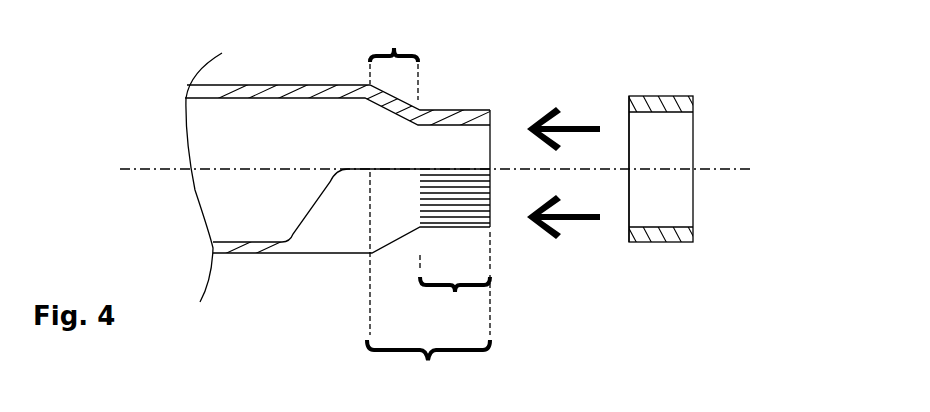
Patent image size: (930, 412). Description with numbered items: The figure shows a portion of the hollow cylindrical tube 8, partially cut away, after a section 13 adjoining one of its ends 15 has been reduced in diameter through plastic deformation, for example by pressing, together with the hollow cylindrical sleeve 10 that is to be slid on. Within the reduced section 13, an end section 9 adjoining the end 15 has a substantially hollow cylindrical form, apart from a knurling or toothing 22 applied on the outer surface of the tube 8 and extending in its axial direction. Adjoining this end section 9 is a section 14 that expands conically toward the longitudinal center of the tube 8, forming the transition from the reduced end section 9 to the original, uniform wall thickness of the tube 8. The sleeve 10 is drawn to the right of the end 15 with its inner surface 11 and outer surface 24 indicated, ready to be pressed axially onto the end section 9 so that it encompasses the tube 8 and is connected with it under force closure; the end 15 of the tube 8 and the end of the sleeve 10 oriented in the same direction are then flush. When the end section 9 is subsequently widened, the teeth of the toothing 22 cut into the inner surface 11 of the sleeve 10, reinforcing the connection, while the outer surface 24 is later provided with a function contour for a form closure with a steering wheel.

The tube 8 is at (238, 90).
The section 14 is at (394, 59).
The end 15 is at (490, 110).
The toothing 22 is at (470, 192).
The end section 9 is at (455, 277).
The section 13 is at (428, 285).
The sleeve 10 is at (676, 100).
The outer surface 24 is at (633, 97).
The inner surface 11 is at (676, 113).